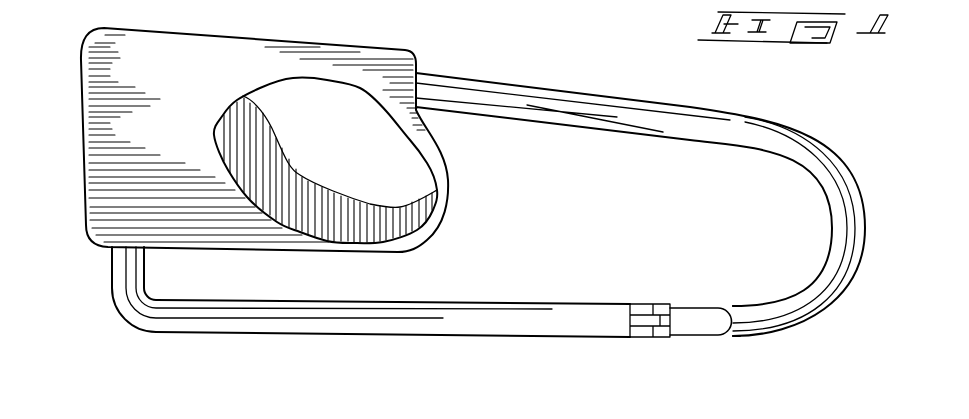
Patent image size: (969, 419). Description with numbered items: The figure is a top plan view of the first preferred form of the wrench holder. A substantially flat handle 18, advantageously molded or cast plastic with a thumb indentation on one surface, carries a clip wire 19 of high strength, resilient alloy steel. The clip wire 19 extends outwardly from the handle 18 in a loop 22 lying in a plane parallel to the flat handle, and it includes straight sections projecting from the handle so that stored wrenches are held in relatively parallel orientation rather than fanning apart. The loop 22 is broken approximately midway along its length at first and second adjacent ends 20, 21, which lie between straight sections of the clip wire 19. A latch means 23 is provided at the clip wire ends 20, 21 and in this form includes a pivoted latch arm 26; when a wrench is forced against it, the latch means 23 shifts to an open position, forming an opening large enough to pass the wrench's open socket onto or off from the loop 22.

The handle 18 is at (85, 187).
The clip wire 19 is at (618, 133).
The first end 20 is at (614, 328).
The second end 21 is at (742, 340).
The loop 22 is at (652, 226).
The latch means 23 is at (694, 344).
The pivoted latch arm 26 is at (693, 312).